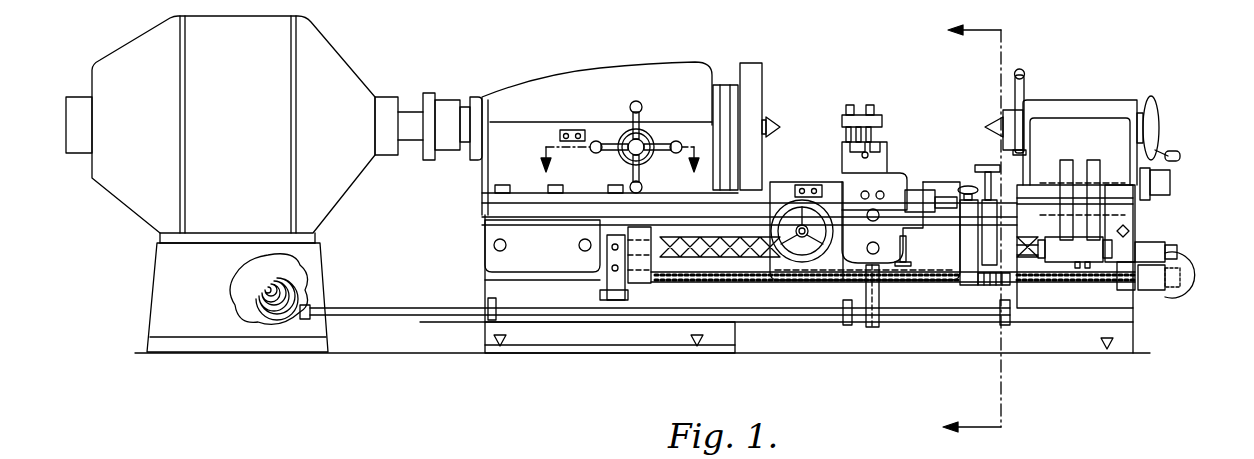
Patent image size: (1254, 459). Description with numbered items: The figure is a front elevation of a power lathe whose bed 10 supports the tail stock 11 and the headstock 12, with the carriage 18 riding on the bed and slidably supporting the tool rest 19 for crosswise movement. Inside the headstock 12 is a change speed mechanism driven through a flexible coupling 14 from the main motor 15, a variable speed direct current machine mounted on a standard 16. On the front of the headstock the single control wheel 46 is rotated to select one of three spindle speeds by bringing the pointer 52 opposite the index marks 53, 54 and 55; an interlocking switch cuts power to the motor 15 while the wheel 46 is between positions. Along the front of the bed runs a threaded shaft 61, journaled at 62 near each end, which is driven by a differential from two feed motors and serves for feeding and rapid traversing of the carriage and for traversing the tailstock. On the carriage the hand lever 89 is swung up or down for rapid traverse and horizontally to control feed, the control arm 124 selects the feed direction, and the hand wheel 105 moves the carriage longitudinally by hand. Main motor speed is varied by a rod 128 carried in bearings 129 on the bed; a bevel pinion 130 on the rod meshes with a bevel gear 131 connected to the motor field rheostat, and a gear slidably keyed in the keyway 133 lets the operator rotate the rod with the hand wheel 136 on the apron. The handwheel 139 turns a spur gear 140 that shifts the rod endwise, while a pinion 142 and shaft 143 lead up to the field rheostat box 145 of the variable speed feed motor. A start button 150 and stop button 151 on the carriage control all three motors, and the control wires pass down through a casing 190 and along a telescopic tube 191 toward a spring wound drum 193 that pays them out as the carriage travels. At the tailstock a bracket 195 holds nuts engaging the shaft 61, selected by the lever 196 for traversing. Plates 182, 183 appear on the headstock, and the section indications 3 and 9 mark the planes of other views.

The bed 10 is at (1095, 312).
The tail stock 11 is at (1073, 98).
The headstock 12 is at (562, 78).
The flexible coupling 14 is at (440, 96).
The motor 15 is at (232, 129).
The standard 16 is at (237, 297).
The carriage 18 is at (780, 185).
The tool rest 19 is at (888, 148).
The control wheel 46 is at (618, 150).
The pointer 52 is at (648, 140).
The index mark 53 is at (655, 135).
The index mark 54 is at (648, 163).
The index mark 55 is at (634, 130).
The shaft 61 is at (1035, 245).
The journal 62 is at (653, 238).
The hand lever 89 is at (940, 197).
The hand wheel 105 is at (828, 240).
The control arm 124 is at (908, 250).
The rod 128 is at (1062, 287).
The bearings 129 is at (645, 283).
The bevel pinion 130 is at (1197, 285).
The bevel gear 131 is at (1182, 270).
The keyway 133 is at (1040, 287).
The hand wheel 136 is at (965, 180).
The handwheel 139 is at (990, 165).
The spur gear 140 is at (992, 285).
The pinion 142 is at (1160, 290).
The shaft 143 is at (1150, 228).
The field rheostat box 145 is at (1170, 175).
The start switch button 150 is at (802, 184).
The stop switch button 151 is at (816, 184).
The name plate 182 is at (565, 132).
The name plate screw 183 is at (580, 130).
The casing 190 is at (872, 327).
The telescopic tube support 191 is at (790, 318).
The spiral spring drum 193 is at (290, 278).
The bracket 195 is at (1048, 185).
The lever 196 is at (1093, 165).
The section line 3- 3 is at (965, 236).
The section arrows 9- 9 is at (609, 171).